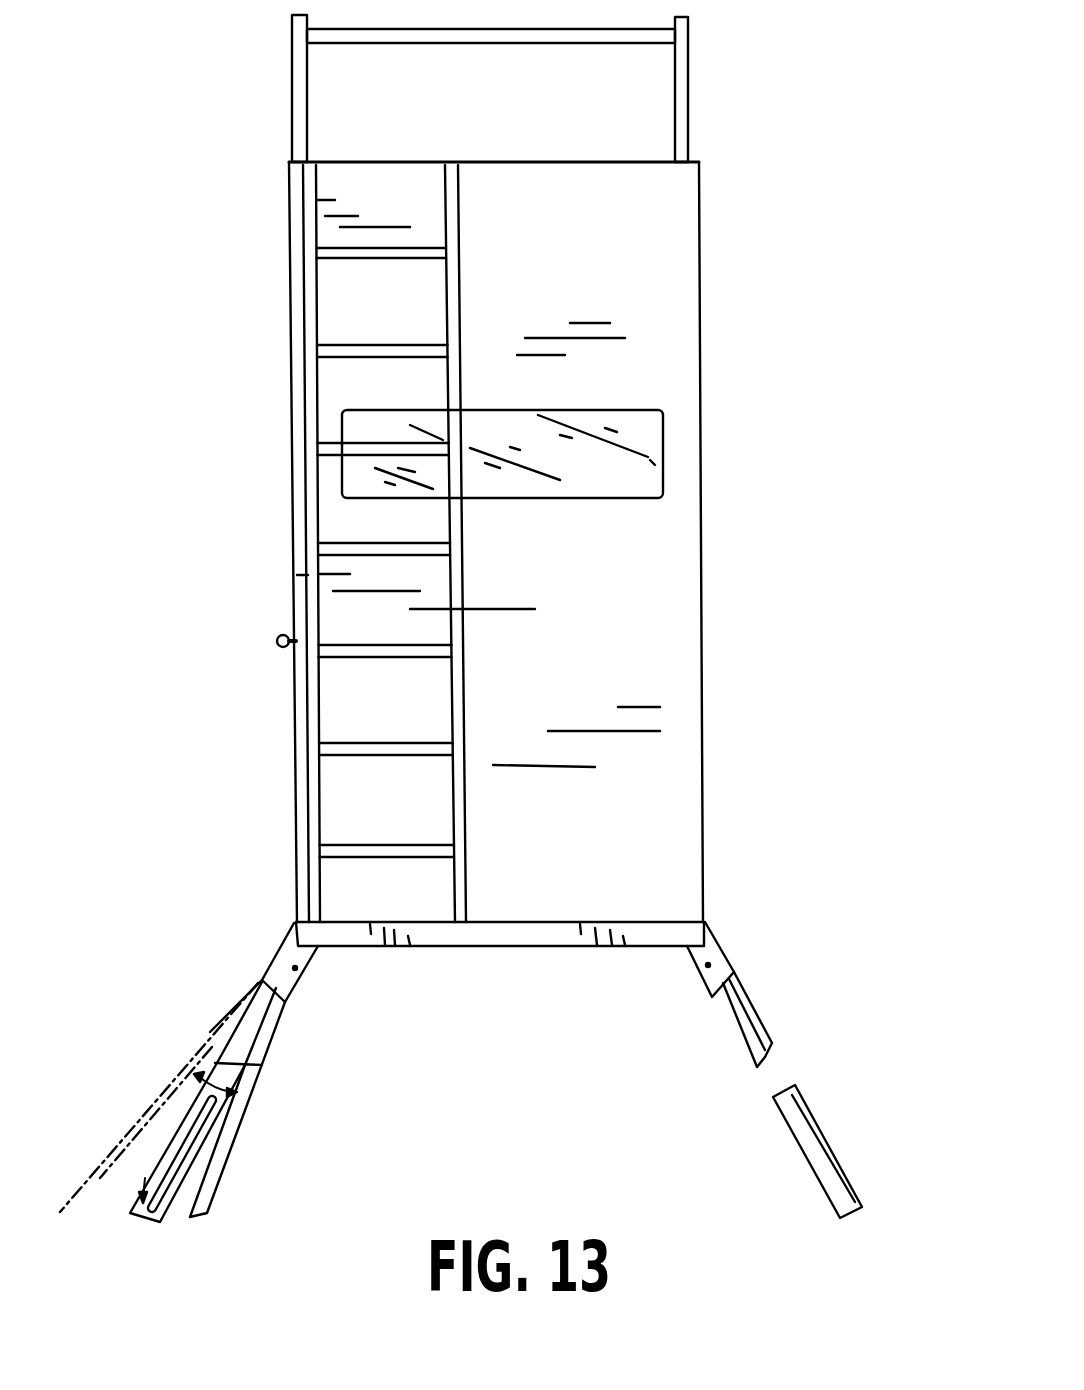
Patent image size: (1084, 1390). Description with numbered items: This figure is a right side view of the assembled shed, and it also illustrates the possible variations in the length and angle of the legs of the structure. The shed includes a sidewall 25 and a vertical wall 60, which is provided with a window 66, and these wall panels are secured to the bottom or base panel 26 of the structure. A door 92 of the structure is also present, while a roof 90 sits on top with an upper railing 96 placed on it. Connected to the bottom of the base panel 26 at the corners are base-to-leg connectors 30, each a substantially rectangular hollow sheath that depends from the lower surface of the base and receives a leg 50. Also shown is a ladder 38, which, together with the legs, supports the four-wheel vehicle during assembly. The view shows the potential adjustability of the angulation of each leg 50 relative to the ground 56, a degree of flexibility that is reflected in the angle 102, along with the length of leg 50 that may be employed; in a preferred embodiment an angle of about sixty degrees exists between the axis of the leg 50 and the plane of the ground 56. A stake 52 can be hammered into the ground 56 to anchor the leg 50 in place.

The sidewall 25 is at (702, 623).
The bottom or base panel 26 is at (633, 920).
The base-to-leg connector 30 is at (307, 972).
The ladder 38 is at (313, 775).
The leg 50 is at (763, 1025).
The stake 52 is at (853, 1180).
The ground 56 is at (312, 1342).
The vertical wall 60 is at (660, 783).
The window 66 is at (650, 462).
The roof 90 is at (620, 163).
The door 92 is at (295, 462).
The upper railing 96 is at (688, 77).
The angle 102 is at (253, 1063).